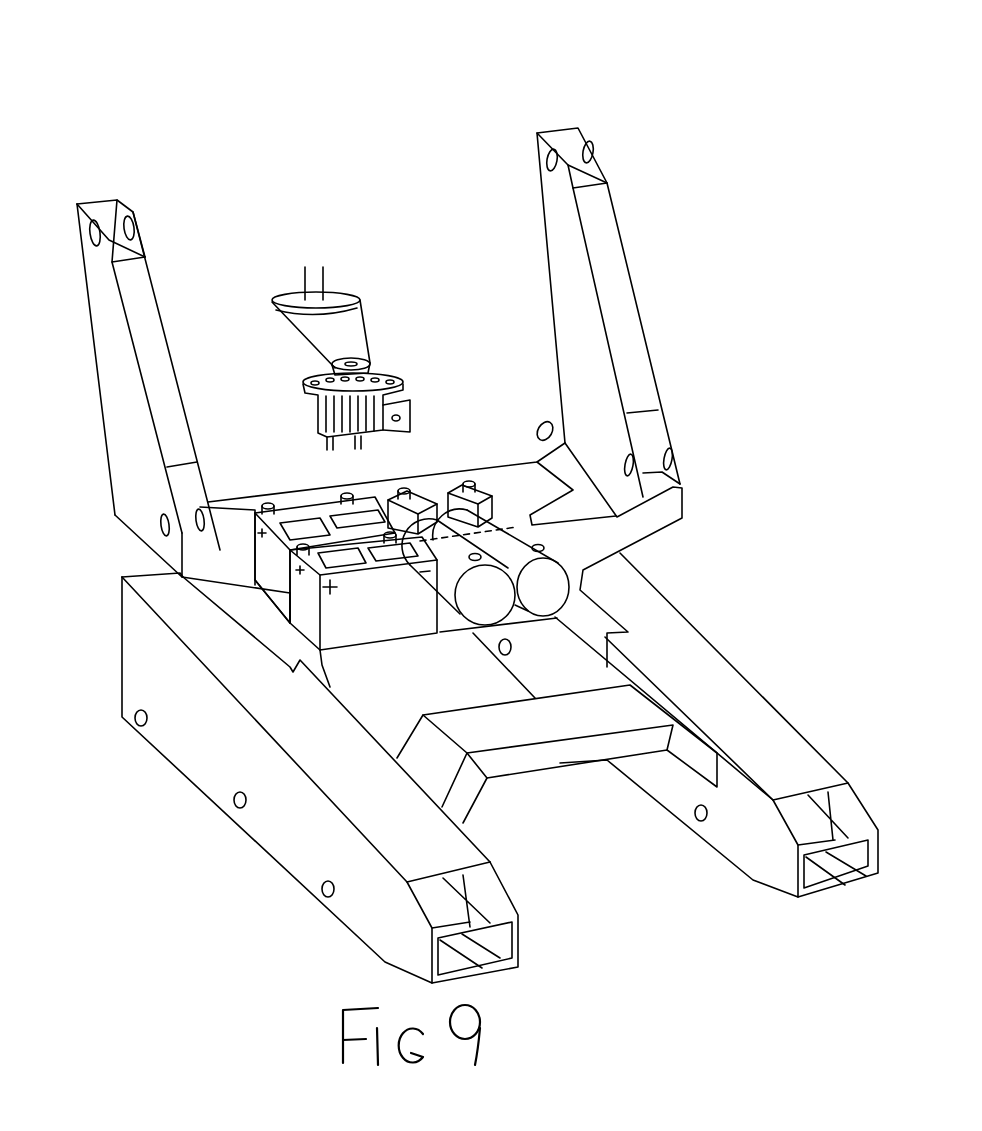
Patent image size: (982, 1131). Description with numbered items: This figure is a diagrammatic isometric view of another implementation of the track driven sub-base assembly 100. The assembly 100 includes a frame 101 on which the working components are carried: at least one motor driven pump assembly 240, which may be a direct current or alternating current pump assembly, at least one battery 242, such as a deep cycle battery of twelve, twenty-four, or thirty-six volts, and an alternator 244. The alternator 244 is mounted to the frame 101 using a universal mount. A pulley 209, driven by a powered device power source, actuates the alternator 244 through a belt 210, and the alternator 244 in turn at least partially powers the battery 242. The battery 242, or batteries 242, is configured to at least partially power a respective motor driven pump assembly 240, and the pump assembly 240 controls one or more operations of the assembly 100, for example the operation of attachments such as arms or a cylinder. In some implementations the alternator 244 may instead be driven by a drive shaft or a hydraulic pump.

The track driven sub-base assembly 100 is at (413, 42).
The frame 101 is at (773, 702).
The pulley 209 is at (290, 297).
The belt 210 is at (367, 340).
The alternator 244 is at (393, 377).
The battery 242 is at (347, 500).
The motor driven pump assembly 240 is at (422, 512).